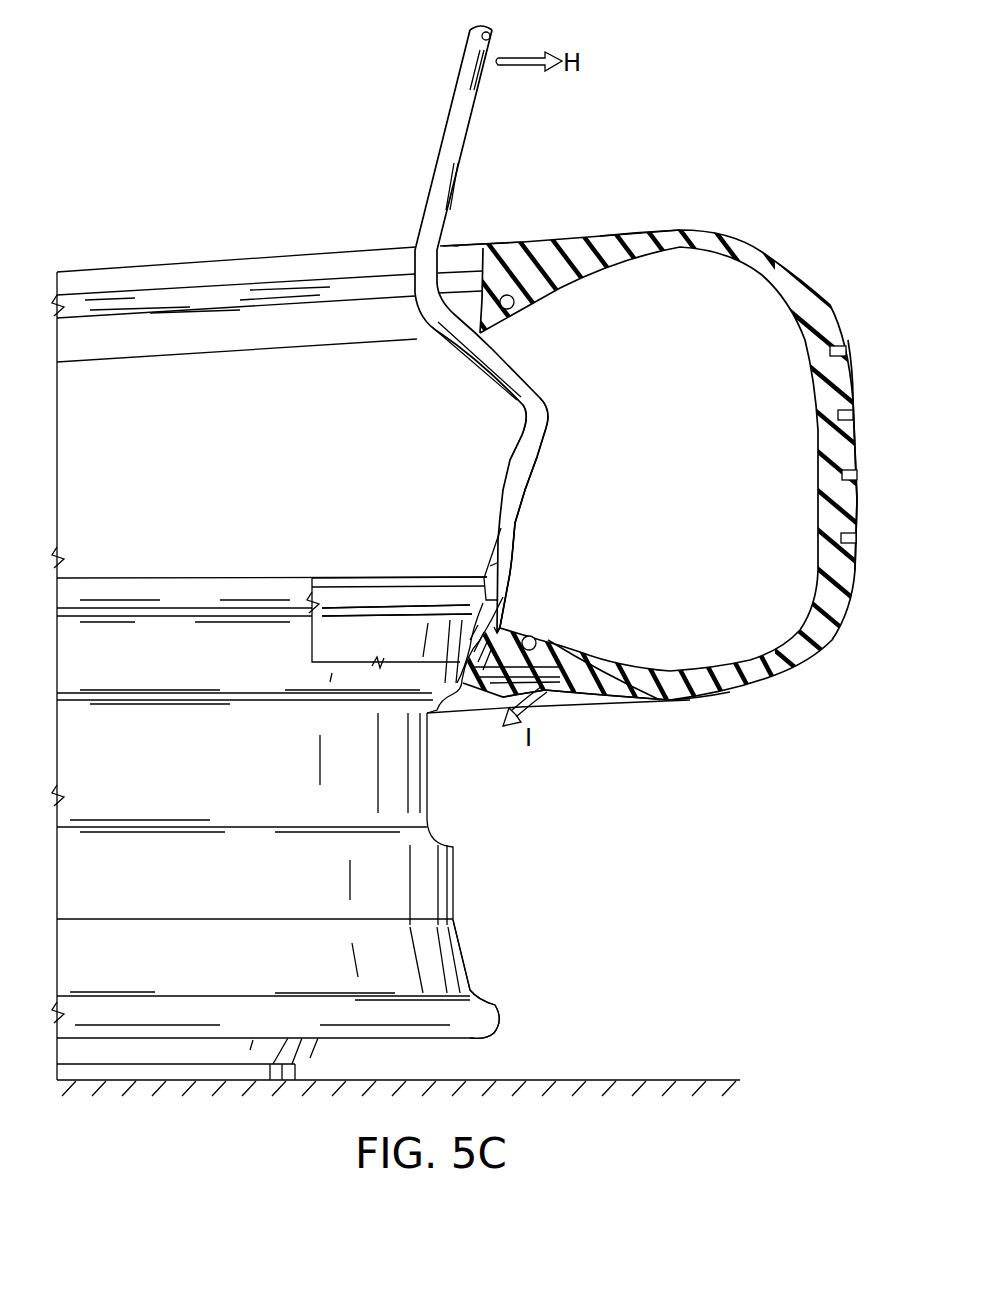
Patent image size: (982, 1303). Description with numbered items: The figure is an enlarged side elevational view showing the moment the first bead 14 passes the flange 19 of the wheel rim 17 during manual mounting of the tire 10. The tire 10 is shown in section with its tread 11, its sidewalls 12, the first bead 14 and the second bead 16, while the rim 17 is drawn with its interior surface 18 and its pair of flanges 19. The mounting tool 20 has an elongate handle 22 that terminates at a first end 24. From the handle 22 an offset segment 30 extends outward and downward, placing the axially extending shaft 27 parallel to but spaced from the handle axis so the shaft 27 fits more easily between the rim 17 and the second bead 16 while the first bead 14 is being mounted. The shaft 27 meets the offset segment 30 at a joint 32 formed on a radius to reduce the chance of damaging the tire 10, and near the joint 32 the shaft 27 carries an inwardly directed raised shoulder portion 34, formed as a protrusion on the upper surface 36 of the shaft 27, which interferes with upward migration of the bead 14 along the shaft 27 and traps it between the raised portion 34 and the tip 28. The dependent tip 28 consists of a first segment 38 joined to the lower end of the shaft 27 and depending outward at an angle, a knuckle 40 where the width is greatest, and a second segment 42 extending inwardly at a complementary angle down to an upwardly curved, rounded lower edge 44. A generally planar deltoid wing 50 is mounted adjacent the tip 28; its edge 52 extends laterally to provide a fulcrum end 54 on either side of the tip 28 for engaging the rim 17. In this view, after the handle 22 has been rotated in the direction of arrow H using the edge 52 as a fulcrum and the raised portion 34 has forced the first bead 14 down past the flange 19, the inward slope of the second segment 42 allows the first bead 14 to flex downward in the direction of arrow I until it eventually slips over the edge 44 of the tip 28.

The tire 10 is at (752, 228).
The tread 11 is at (849, 380).
The sidewalls 12 is at (680, 229).
The first bead 14 is at (537, 643).
The second bead 16 is at (510, 298).
The wheel rim 17 is at (465, 894).
The interior surface 18 is at (462, 951).
The flanges 19 is at (498, 1020).
The mounting tool 20 is at (405, 109).
The handle 22 is at (468, 63).
The first end 24 is at (585, 480).
The shaft 27 is at (498, 459).
The tip 28 is at (522, 612).
The offset segment 30 is at (480, 357).
The joint 32 is at (548, 419).
The raised shoulder portion 34 is at (542, 447).
The upper surface 36 is at (522, 495).
The first segment 38 is at (512, 557).
The knuckle 40 is at (510, 582).
The second segment 42 is at (510, 607).
The lower edge 44 is at (494, 633).
The wing 50 is at (483, 533).
The edge 52 is at (458, 587).
The fulcrum end 54 is at (487, 578).